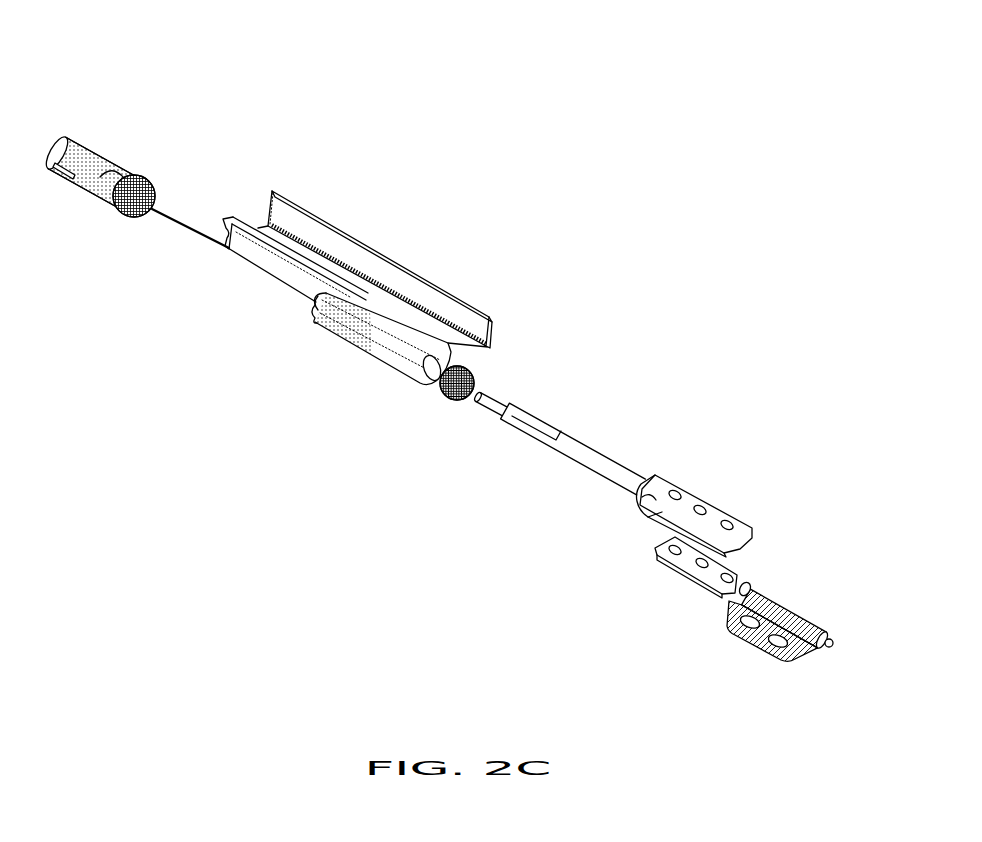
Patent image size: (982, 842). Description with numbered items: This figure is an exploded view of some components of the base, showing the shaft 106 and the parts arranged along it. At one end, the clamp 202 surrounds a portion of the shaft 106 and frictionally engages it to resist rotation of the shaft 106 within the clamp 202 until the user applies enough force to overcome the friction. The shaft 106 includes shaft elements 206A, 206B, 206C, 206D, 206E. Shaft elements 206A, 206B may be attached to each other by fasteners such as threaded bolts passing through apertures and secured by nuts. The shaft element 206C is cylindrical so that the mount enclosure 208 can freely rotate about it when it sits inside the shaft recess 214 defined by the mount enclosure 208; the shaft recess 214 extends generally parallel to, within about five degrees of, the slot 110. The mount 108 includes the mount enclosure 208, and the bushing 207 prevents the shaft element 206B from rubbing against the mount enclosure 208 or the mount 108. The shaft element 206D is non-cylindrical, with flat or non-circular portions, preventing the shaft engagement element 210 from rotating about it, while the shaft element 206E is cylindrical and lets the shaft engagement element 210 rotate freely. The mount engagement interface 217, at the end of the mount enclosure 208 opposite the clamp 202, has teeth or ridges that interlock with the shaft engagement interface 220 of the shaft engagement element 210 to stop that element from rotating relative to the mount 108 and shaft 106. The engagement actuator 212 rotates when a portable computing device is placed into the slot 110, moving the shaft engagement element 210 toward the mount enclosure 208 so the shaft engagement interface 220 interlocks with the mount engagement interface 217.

The engagement actuator 212 is at (87, 142).
The shaft engagement element 210 is at (143, 182).
The slot 110 is at (259, 216).
The mount 108 is at (433, 280).
The bushing 207 is at (477, 379).
The shaft element 206E is at (500, 397).
The shaft element 206C is at (627, 466).
The shaft element 206B is at (742, 522).
The shaft engagement interface 220 is at (137, 221).
The mount engagement interface 217 is at (313, 311).
The mount enclosure 208 is at (365, 352).
The shaft recess 214 is at (432, 381).
The shaft element 206D is at (537, 423).
The shaft element 206A is at (690, 584).
The clamp 202 is at (755, 652).
The shaft 106 is at (828, 647).